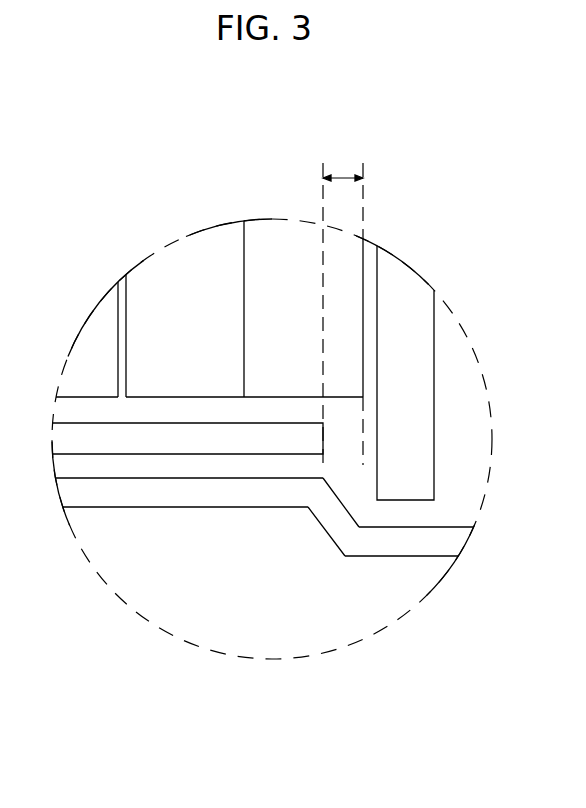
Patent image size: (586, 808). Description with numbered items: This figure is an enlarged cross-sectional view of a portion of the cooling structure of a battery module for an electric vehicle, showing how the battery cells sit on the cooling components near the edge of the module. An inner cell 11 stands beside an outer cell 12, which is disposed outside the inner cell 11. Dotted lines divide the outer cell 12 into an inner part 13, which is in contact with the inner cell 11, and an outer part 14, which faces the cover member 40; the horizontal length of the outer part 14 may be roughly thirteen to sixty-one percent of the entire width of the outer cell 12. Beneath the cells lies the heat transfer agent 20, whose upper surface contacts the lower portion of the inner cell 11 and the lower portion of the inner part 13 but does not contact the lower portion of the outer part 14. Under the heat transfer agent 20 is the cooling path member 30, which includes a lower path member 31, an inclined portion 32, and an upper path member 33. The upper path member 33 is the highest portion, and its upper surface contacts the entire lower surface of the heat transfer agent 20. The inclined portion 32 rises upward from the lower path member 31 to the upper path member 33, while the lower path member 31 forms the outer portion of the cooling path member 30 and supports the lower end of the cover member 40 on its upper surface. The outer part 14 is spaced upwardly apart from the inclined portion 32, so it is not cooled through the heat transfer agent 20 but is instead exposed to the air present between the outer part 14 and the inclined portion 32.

The inner cell 11 is at (193, 285).
The outer cell 12 is at (238, 147).
The inner part 13 is at (270, 257).
The outer part 14 is at (342, 260).
The heat transfer agent 20 is at (110, 440).
The cooling path member 30 is at (322, 727).
The lower path member 31 is at (390, 540).
The inclined portion 32 is at (333, 525).
The upper path member 33 is at (203, 495).
The cover member 40 is at (420, 365).